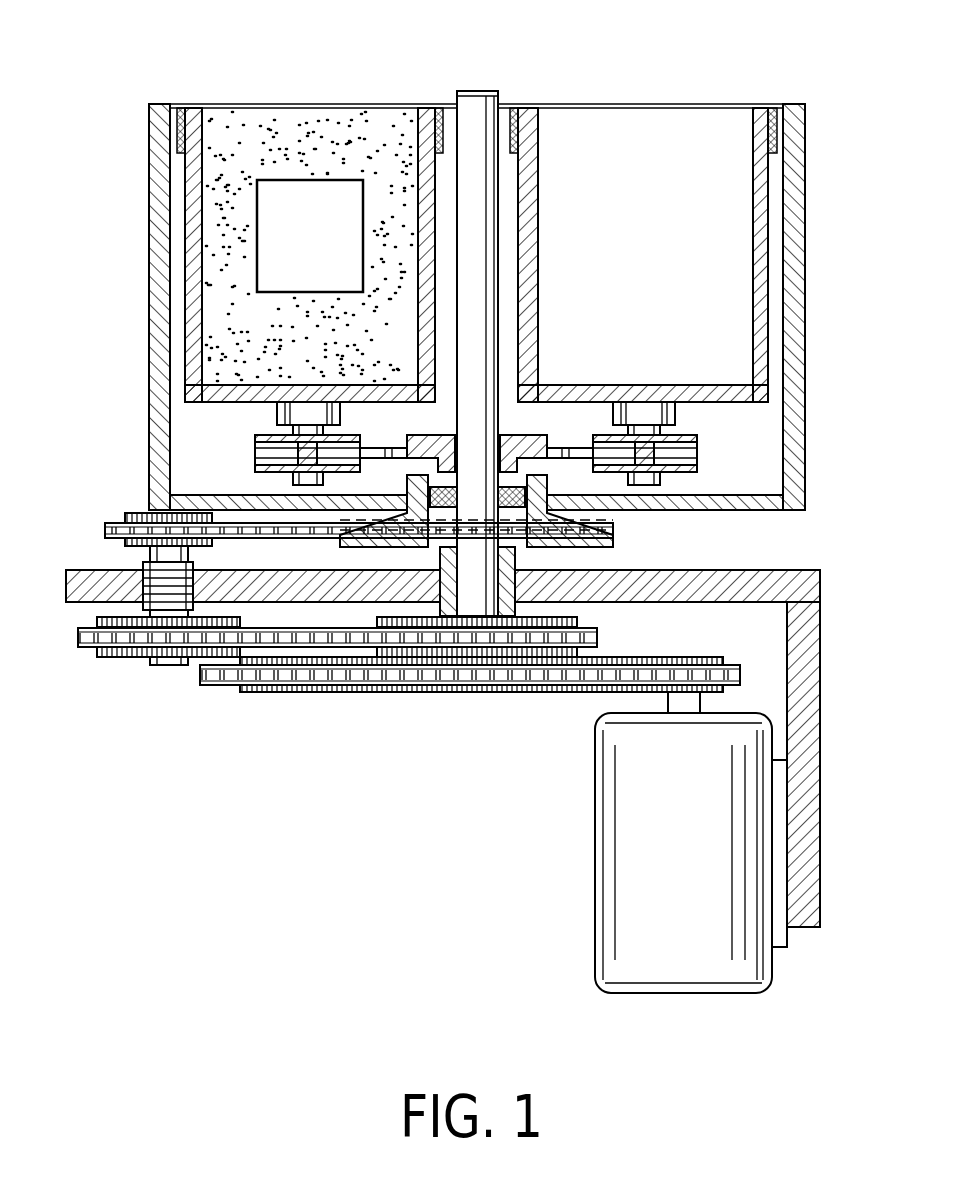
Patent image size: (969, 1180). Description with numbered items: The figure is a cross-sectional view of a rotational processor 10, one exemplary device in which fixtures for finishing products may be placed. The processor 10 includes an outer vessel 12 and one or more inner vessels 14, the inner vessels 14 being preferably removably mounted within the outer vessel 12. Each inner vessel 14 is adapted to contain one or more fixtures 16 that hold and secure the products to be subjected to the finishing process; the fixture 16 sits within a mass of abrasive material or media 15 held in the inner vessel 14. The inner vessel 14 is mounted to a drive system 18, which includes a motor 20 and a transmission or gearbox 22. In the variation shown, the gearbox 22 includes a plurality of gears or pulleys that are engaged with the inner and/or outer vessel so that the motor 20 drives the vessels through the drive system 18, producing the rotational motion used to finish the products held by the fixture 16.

The processor 10 is at (230, 777).
The outer vessel 12 is at (163, 158).
The inner vessel 14 is at (760, 192).
The abrasive material or media 15 is at (240, 338).
The fixture 16 is at (318, 180).
The drive system 18 is at (485, 855).
The motor 20 is at (695, 943).
The transmission or gearbox 22 is at (475, 692).